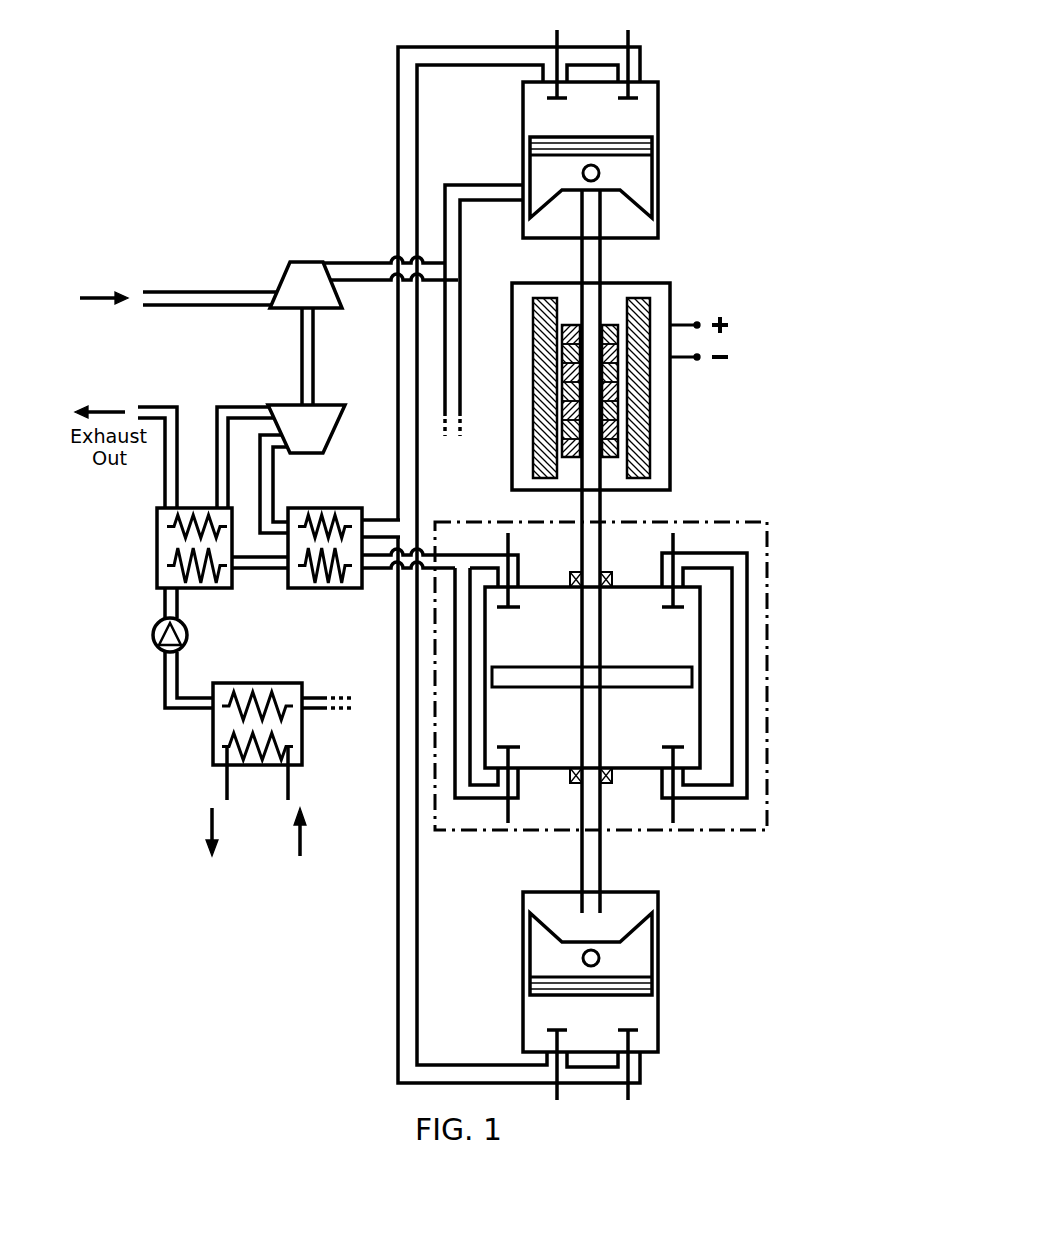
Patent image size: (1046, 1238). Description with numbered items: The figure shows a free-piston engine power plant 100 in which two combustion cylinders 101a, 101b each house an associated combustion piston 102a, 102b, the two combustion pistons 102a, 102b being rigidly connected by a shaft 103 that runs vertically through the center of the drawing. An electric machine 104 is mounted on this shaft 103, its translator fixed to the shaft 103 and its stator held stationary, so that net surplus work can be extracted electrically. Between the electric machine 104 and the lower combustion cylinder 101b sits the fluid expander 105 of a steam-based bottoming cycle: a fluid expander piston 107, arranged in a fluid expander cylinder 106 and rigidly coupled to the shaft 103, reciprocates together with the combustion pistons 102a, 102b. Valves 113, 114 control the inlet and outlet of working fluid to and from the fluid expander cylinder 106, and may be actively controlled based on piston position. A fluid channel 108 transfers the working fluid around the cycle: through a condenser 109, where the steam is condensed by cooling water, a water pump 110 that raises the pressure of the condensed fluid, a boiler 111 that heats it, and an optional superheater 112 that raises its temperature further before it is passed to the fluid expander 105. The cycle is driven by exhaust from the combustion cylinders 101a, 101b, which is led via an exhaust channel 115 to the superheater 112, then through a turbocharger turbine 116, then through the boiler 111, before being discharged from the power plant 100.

The free-piston engine power plant 100 is at (864, 802).
The combustion cylinder 101a is at (616, 233).
The combustion cylinder 101b is at (653, 996).
The combustion piston 102a is at (650, 176).
The combustion piston 102b is at (637, 955).
The shaft 103 is at (596, 860).
The electric machine 104 is at (668, 298).
The fluid expander 105 is at (683, 640).
The fluid expander cylinder 106 is at (770, 535).
The fluid expander piston 107 is at (683, 677).
The fluid channel 108 is at (463, 790).
The condenser 109 is at (222, 727).
The water pump 110 is at (152, 645).
The boiler 111 is at (167, 548).
The superheater 112 is at (300, 577).
The valve 113 is at (510, 803).
The valve 114 is at (677, 540).
The exhaust channel 115 is at (408, 1050).
The turbocharger turbine 116 is at (297, 283).